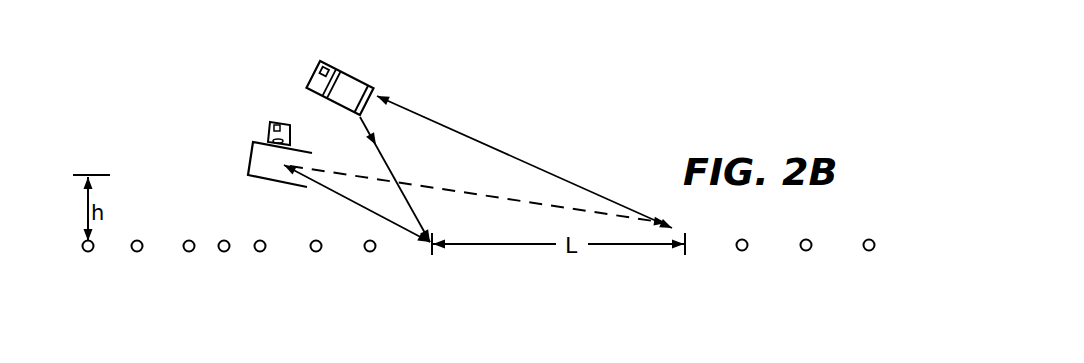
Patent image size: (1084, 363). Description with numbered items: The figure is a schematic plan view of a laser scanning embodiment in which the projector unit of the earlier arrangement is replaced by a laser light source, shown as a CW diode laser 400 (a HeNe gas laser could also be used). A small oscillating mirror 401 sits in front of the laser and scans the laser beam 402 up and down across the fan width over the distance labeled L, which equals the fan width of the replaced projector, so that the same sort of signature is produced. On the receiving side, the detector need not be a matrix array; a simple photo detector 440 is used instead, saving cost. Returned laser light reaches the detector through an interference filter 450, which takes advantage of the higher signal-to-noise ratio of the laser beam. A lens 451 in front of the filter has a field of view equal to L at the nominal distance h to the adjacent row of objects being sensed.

The CW diode laser 400 is at (272, 121).
The oscillating mirror 401 is at (268, 168).
The light beam 402 is at (352, 200).
The photo detector 440 is at (320, 63).
The interference filter 450 is at (345, 75).
The lens 451 is at (373, 90).